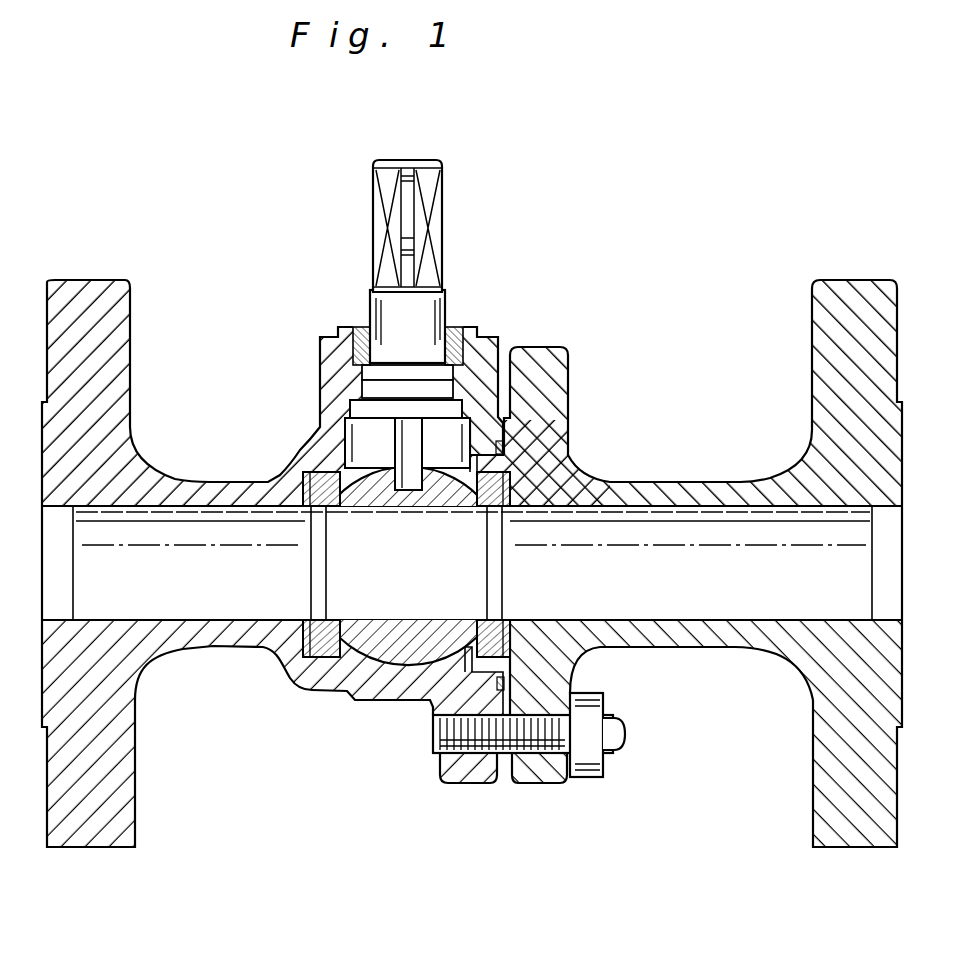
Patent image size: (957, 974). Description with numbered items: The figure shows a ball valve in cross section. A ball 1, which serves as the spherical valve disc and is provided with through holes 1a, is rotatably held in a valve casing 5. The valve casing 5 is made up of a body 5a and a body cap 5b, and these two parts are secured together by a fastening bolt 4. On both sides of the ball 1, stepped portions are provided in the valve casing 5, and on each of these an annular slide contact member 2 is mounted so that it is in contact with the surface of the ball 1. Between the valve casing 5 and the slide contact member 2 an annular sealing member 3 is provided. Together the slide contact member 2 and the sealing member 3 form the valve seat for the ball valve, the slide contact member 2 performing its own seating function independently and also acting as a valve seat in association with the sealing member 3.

The ball 1 is at (342, 662).
The through holes 1a is at (436, 508).
The annular slide contact member 2 is at (568, 385).
The annular sealing member 3 is at (512, 488).
The fastening bolt 4 is at (430, 740).
The valve casing 5 is at (472, 563).
The body 5a is at (212, 482).
The body cap 5b is at (690, 482).